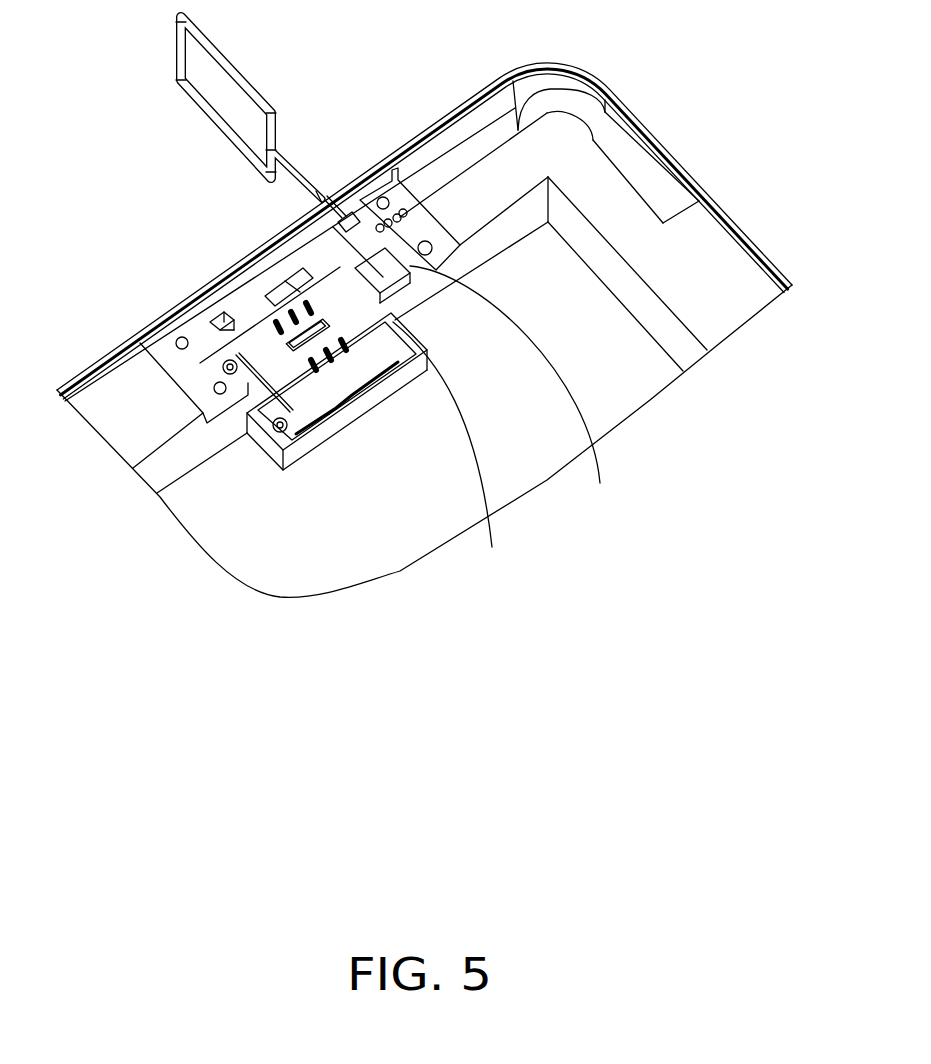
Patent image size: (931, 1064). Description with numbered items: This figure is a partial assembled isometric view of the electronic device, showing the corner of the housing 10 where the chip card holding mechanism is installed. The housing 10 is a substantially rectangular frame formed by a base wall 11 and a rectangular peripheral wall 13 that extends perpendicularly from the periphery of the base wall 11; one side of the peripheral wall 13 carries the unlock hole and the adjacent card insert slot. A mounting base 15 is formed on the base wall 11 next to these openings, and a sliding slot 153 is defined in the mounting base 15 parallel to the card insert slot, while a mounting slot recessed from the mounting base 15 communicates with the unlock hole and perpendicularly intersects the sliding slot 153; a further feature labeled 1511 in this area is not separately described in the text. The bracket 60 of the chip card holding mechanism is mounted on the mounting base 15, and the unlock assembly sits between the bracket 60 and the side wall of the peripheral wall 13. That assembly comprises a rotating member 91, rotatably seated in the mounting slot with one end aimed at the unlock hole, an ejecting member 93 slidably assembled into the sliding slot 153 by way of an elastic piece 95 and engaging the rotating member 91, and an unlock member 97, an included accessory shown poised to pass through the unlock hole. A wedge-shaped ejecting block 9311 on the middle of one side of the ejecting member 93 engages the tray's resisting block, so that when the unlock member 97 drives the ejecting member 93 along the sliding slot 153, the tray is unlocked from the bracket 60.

The housing 10 is at (677, 151).
The base wall 11 is at (636, 383).
The peripheral wall 13 is at (470, 120).
The mounting base 15 is at (453, 460).
The groove wall 1511 is at (525, 397).
The bracket 60 is at (307, 387).
The rotating member 91 is at (350, 220).
The ejecting member 93 is at (200, 347).
The ejecting block 9311 is at (237, 307).
The elastic piece 95 is at (392, 172).
The unlock member 97 is at (227, 60).
The sliding slot 153 is at (377, 225).